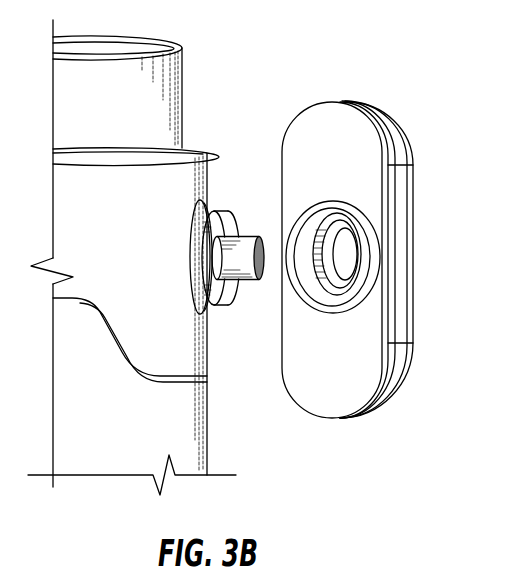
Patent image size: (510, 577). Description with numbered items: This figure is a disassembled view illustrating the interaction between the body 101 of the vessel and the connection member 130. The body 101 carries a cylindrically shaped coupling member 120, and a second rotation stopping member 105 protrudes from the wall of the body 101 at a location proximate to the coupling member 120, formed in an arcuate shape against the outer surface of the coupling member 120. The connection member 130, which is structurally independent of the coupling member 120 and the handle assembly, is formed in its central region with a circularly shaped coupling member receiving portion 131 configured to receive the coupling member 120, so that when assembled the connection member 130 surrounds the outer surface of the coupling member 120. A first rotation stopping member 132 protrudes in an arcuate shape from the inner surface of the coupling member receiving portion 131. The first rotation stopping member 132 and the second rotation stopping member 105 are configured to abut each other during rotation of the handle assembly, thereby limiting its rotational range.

The body 101 is at (176, 339).
The second rotation stopping member 105 is at (222, 300).
The coupling member 120 is at (237, 238).
The connection member 130 is at (332, 117).
The coupling member receiving portion 131 is at (354, 265).
The first rotation stopping member 132 is at (343, 228).